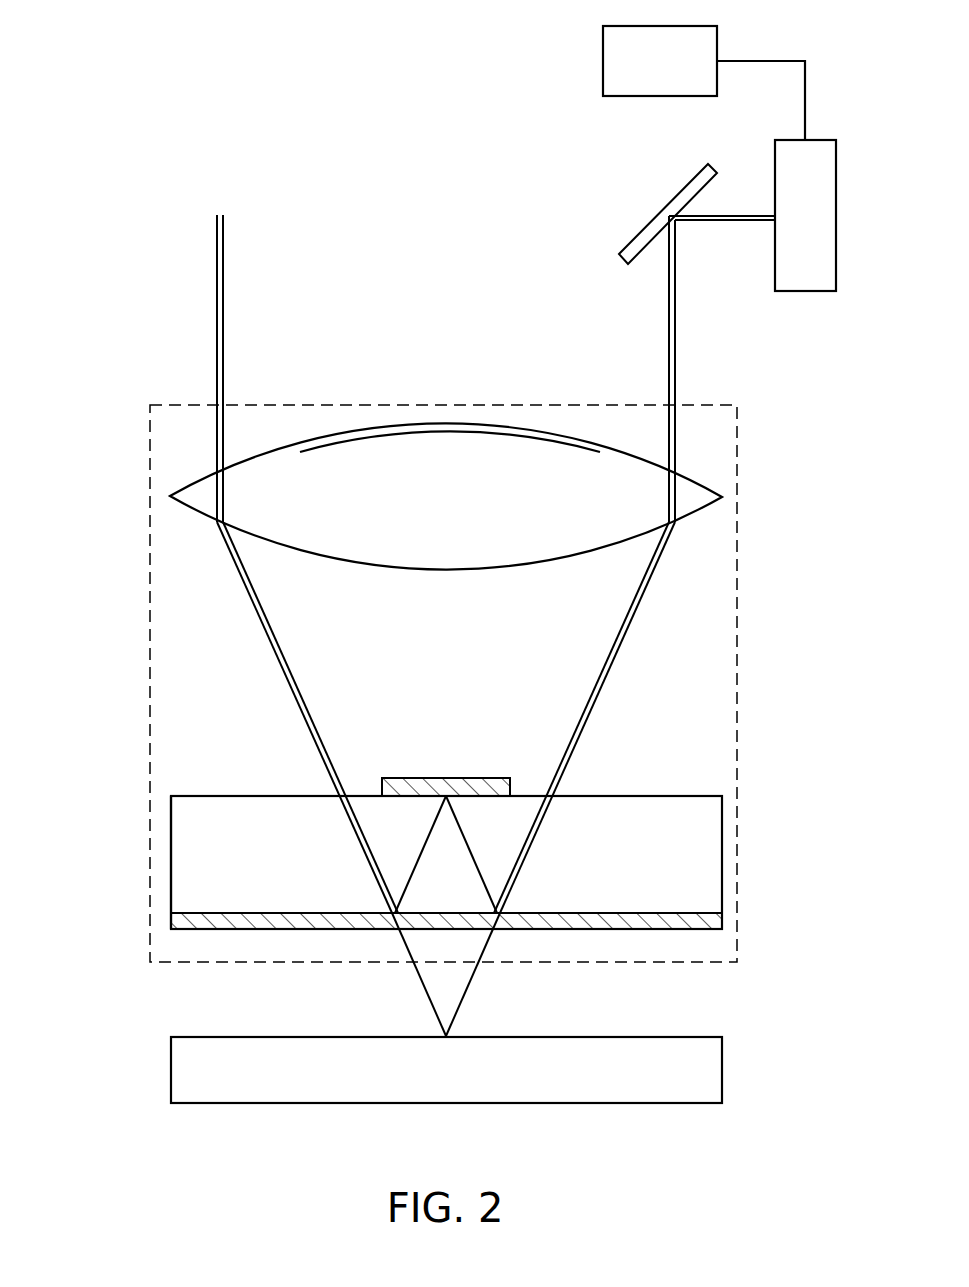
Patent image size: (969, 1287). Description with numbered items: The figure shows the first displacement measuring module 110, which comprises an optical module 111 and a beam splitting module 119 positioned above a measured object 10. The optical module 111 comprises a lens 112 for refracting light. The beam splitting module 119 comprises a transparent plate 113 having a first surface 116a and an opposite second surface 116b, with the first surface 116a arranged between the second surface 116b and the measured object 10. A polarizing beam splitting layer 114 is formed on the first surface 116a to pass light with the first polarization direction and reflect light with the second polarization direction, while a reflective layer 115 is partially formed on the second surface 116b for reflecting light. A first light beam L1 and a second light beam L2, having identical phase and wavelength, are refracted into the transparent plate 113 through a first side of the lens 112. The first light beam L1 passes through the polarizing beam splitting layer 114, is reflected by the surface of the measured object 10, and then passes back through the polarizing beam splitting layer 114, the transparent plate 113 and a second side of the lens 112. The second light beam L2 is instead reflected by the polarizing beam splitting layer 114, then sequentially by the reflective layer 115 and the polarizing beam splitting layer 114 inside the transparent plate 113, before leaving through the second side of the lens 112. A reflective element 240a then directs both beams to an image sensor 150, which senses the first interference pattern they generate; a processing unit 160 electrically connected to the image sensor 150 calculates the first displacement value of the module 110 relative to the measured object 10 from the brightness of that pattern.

The measured object 10 is at (460, 1086).
The first displacement measuring module 110 is at (150, 405).
The optical module 111 is at (168, 488).
The lens 112 is at (447, 423).
The transparent plate 113 is at (182, 859).
The polarizing beam splitting layer 114 is at (267, 930).
The reflective layer 115 is at (443, 778).
The first surface 116a is at (697, 905).
The second surface 116b is at (695, 790).
The beam splitting module 119 is at (170, 777).
The image sensor 150 is at (783, 233).
The processing unit 160 is at (636, 76).
The reflective element 240a is at (650, 222).
The first light beam L1 is at (213, 340).
The second light beam L2 is at (227, 340).